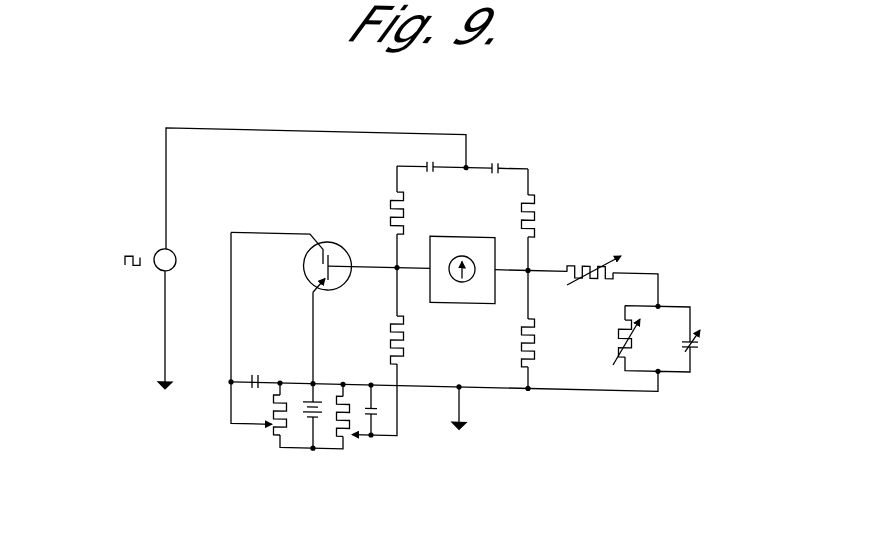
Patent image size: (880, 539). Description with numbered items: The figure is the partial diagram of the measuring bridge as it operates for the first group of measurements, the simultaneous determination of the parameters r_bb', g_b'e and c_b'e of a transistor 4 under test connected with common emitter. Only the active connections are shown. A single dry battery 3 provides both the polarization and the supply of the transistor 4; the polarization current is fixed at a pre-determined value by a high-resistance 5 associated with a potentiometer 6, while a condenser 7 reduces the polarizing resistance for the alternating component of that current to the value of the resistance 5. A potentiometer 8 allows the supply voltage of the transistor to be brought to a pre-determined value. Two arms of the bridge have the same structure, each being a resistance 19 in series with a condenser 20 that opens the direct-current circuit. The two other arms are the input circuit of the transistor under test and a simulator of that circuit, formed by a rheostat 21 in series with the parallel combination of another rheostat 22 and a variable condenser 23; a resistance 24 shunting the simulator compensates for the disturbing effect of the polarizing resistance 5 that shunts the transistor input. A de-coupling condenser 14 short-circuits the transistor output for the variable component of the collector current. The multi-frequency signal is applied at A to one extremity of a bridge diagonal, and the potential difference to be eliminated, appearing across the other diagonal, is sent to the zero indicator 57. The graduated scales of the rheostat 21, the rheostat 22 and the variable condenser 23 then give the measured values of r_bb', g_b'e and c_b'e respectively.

The signal application point A is at (176, 266).
The transistor 4 is at (341, 250).
The condenser 20 is at (491, 169).
The resistance 19 is at (521, 214).
The zero indicator 57 is at (462, 300).
The high-resistance 5 is at (403, 363).
The resistance 24 is at (520, 356).
The rheostat 21 is at (619, 264).
The rheostat 22 is at (622, 360).
The variable condenser 23 is at (694, 343).
The de-coupling condenser 14 is at (255, 378).
The potentiometer 8 is at (271, 431).
The dry battery 3 is at (308, 421).
The potentiometer 6 is at (340, 440).
The condenser 7 is at (372, 420).